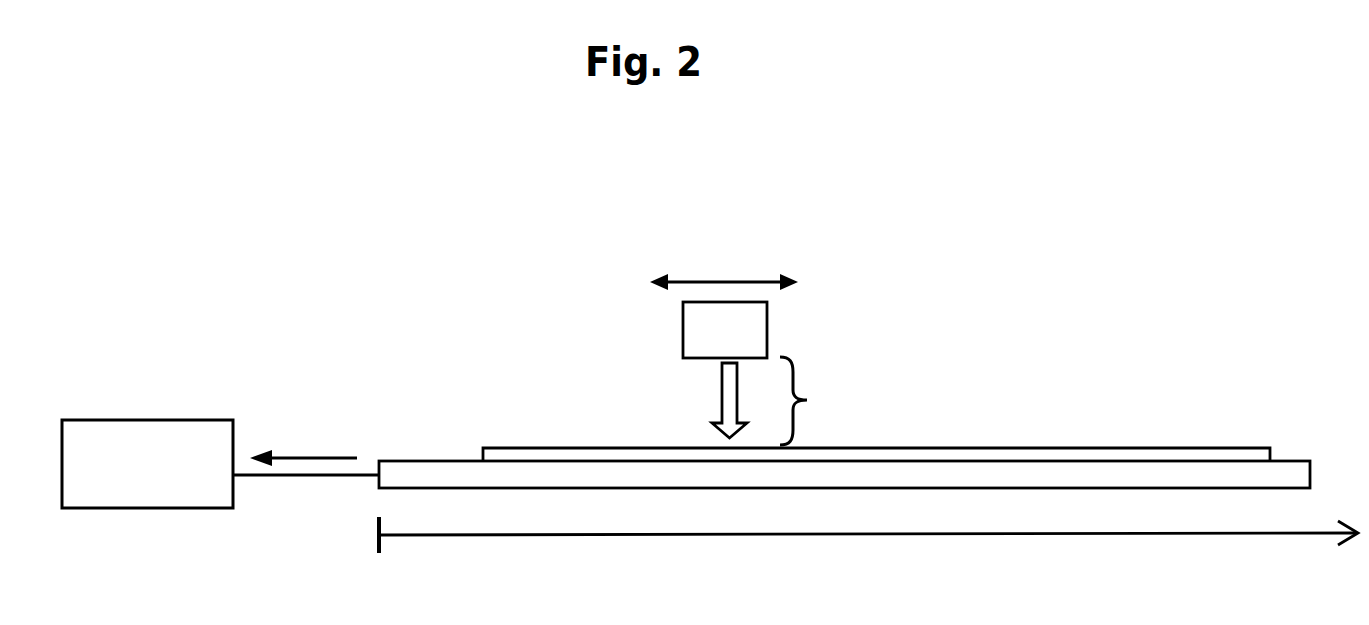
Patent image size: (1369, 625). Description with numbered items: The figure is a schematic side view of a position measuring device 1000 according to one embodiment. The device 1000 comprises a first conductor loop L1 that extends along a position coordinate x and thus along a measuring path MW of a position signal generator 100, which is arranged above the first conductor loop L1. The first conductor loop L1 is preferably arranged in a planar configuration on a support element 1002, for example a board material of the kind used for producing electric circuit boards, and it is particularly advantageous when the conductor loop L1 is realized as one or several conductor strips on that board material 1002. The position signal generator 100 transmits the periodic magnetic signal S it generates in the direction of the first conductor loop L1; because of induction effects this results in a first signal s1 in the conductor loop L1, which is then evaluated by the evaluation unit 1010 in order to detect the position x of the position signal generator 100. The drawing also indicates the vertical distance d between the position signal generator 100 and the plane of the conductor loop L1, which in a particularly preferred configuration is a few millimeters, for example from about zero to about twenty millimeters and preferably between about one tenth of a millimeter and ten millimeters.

The position measuring device 1000 is at (352, 220).
The support element 1002 is at (447, 461).
The evaluation unit 1010 is at (155, 420).
The position signal generator 100 is at (683, 337).
The first conductor loop L1 is at (920, 447).
The measuring path MW is at (712, 281).
The periodic magnetic signal S is at (720, 400).
The vertical distance d is at (811, 401).
The first signal s1 is at (303, 442).
The position coordinate x is at (868, 548).